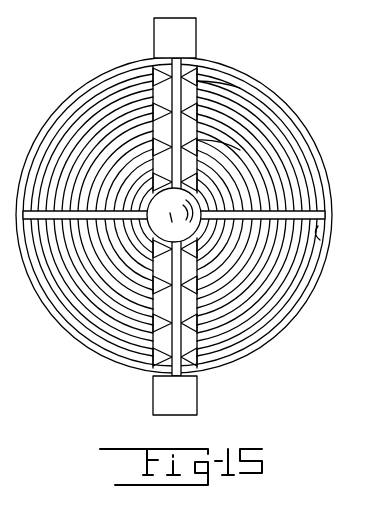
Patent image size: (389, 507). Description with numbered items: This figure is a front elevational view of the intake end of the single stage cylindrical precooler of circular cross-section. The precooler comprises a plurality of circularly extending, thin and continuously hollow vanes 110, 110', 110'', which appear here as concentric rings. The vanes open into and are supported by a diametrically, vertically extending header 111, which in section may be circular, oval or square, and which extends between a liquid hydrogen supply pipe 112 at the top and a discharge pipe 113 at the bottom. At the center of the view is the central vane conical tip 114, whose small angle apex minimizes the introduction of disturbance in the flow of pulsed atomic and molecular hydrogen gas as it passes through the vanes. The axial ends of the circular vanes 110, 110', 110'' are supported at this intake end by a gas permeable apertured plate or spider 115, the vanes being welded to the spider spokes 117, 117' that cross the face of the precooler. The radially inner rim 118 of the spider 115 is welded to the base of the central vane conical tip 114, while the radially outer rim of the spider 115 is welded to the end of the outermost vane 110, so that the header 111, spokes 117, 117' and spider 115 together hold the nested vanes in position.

The hollow vane 110 is at (183, 217).
The hollow vane 110' is at (245, 80).
The hollow vane 110'' is at (279, 134).
The header 111 is at (152, 80).
The liquid hydrogen supply pipe 112 is at (198, 31).
The discharge pipe 113 is at (198, 403).
The central vane conical tip 114 is at (168, 220).
The spider 115 is at (327, 163).
The spider spoke 117 is at (215, 209).
The spider spoke 117' is at (202, 229).
The radially inner rim 118 is at (204, 206).